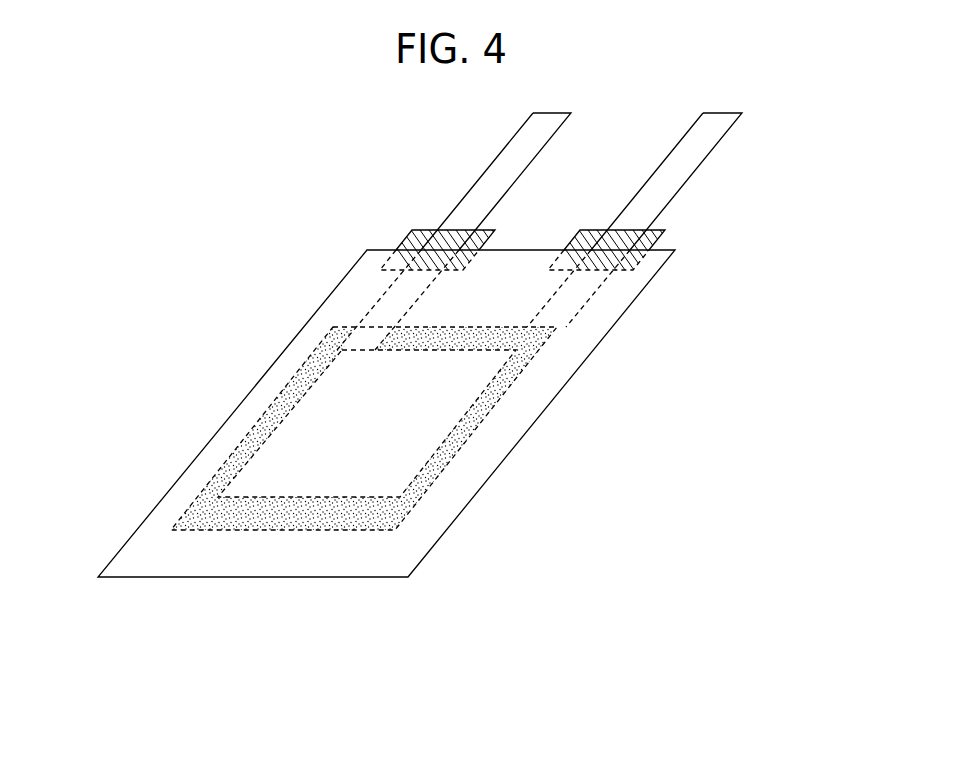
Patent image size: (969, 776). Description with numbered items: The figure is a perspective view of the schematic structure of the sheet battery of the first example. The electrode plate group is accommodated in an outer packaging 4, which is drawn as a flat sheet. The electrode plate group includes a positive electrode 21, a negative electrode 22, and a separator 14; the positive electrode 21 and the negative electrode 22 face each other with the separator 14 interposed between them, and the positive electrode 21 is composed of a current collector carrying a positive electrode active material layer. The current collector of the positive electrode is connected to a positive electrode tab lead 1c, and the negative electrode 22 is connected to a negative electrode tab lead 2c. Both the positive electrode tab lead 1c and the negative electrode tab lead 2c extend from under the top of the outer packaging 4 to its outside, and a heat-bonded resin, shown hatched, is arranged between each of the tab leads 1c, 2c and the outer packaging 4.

The outer packaging 4 is at (512, 450).
The separator 14 is at (397, 518).
The positive electrode 21 is at (293, 422).
The negative electrode 22 is at (530, 368).
The positive electrode tab lead 1c is at (388, 297).
The negative electrode tab lead 2c is at (583, 292).